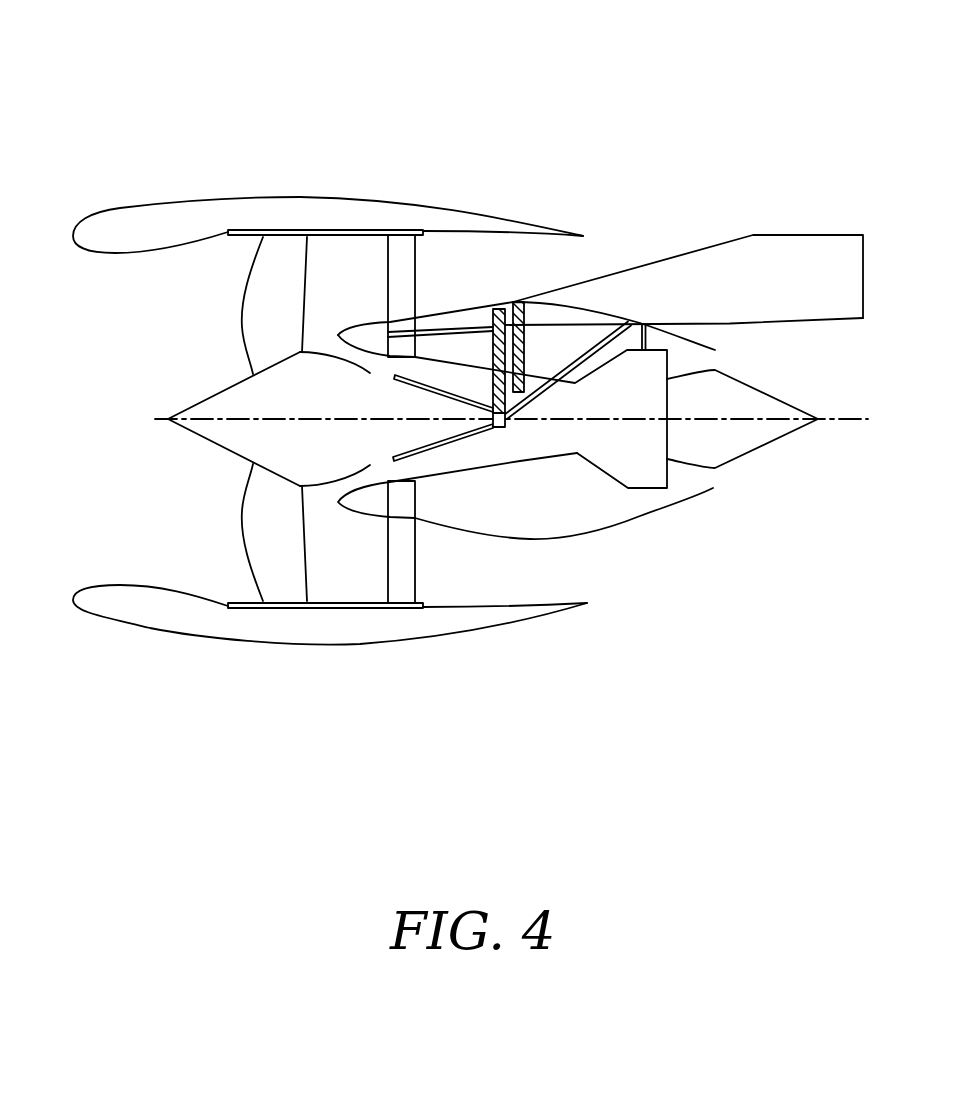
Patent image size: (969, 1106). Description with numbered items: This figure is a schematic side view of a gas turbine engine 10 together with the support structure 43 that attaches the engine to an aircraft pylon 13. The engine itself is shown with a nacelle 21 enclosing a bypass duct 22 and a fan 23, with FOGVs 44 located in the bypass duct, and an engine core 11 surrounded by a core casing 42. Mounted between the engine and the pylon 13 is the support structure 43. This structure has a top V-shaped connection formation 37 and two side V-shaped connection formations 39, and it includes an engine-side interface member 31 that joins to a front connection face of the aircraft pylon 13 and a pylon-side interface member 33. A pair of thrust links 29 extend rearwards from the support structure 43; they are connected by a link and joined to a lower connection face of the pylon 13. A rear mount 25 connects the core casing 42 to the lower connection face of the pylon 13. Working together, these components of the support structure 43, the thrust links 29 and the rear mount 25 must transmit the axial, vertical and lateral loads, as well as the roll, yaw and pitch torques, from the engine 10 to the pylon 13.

The gas turbine engine 10 is at (112, 44).
The engine core 11 is at (420, 444).
The aircraft pylon 13 is at (782, 235).
The nacelle 21 is at (258, 213).
The bypass duct 22 is at (528, 276).
The fan 23 is at (260, 543).
The rear mount 25 is at (648, 350).
The thrust links 29 is at (541, 394).
The engine-side interface member 31 is at (498, 429).
The pylon-side interface member 33 is at (526, 370).
The top V-shaped connection formation 37 is at (436, 328).
The side V-shaped connection formations 39 is at (406, 389).
The core casing 42 is at (540, 463).
The support structure 43 is at (483, 316).
The FOGVs 44 is at (408, 250).